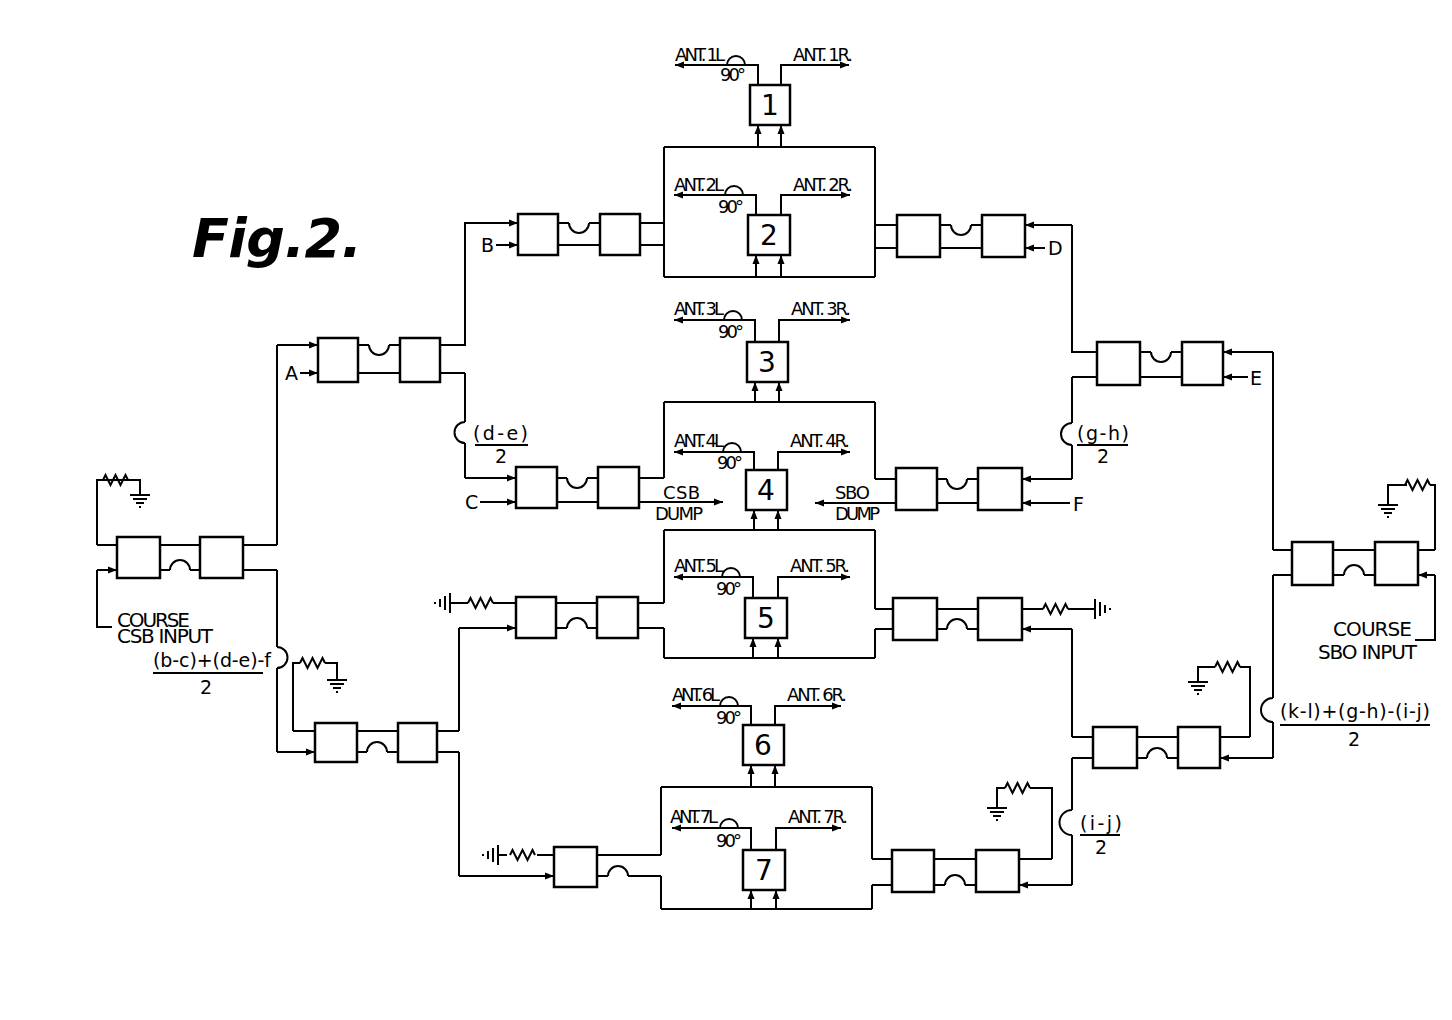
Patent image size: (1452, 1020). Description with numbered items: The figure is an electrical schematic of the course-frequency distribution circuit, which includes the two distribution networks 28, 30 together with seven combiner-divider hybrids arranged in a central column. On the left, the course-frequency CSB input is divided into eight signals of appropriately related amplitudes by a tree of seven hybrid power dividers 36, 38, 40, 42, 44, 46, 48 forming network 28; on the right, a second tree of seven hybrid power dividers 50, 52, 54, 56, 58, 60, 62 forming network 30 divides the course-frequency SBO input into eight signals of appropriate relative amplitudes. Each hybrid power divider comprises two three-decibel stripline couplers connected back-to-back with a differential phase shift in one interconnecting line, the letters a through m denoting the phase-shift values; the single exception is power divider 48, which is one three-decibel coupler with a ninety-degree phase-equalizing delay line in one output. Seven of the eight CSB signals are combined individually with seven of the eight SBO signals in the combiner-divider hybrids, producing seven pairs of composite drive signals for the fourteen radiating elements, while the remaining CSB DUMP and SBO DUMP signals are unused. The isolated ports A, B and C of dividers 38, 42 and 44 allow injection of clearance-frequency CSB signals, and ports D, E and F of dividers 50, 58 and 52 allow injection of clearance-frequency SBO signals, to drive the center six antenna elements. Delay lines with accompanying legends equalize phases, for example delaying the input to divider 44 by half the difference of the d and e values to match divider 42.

The course-frequency CSB distribution network 28 is at (442, 209).
The course-frequency SBO distribution network 30 is at (1088, 222).
The hybrid power divider 36 is at (178, 536).
The hybrid power divider 38 is at (338, 337).
The hybrid power divider 40 is at (341, 764).
The hybrid power divider 42 is at (552, 213).
The hybrid power divider 44 is at (628, 466).
The hybrid power divider 46 is at (543, 596).
The hybrid power divider 48 is at (590, 826).
The hybrid power divider 50 is at (1005, 214).
The hybrid power divider 52 is at (1003, 467).
The hybrid power divider 54 is at (1010, 597).
The hybrid power divider 56 is at (903, 849).
The hybrid power divider 58 is at (1200, 341).
The hybrid power divider 60 is at (1108, 726).
The hybrid power divider 62 is at (1353, 541).